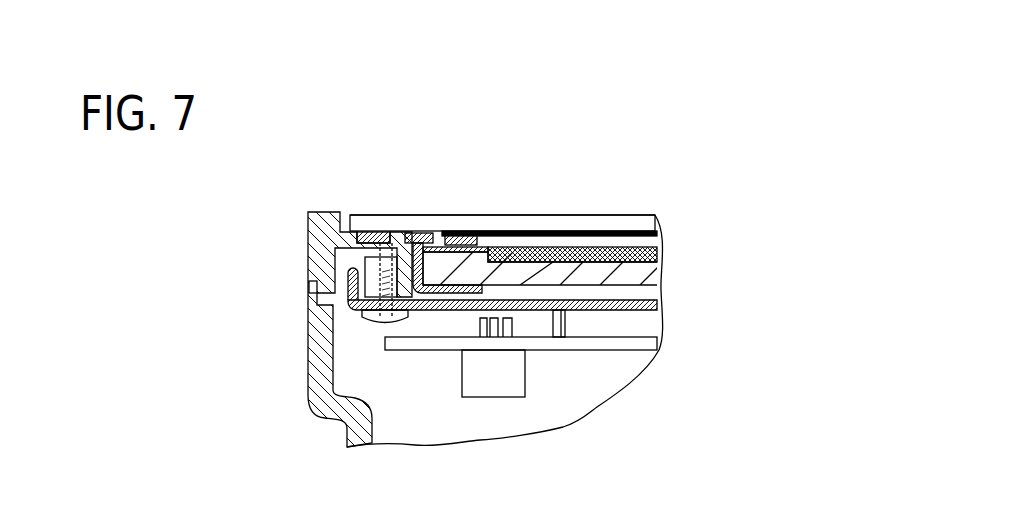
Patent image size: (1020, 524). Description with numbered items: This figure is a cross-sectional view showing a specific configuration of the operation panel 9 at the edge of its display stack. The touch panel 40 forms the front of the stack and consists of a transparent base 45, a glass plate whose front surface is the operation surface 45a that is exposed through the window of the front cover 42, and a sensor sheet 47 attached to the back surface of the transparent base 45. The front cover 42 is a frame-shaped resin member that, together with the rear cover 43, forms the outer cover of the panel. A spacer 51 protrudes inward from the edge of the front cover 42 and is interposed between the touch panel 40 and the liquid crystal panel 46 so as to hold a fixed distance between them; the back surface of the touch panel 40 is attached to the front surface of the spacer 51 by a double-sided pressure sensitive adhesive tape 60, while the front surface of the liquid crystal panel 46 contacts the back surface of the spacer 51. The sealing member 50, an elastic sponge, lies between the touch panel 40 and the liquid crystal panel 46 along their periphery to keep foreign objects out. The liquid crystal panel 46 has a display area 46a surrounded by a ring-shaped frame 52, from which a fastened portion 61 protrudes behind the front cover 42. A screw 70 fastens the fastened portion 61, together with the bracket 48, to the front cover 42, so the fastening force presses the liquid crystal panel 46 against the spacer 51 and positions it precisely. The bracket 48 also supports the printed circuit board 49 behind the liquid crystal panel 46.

The operation panel 9 is at (635, 168).
The touch panel 40 is at (559, 205).
The front cover 42 is at (310, 245).
The rear cover 43 is at (317, 377).
The transparent base 45 is at (535, 197).
The operation surface 45a is at (590, 215).
The liquid crystal panel 46 is at (630, 279).
The display area 46a is at (538, 247).
The sensor sheet 47 is at (633, 239).
The bracket 48 is at (620, 307).
The printed circuit board 49 is at (617, 343).
The sealing member 50 is at (460, 233).
The spacer 51 is at (420, 247).
The ring-shaped frame 52 is at (447, 293).
The double-sided pressure sensitive adhesive tape 60 is at (376, 232).
The fastened portion 61 is at (405, 296).
The screw 70 is at (378, 325).